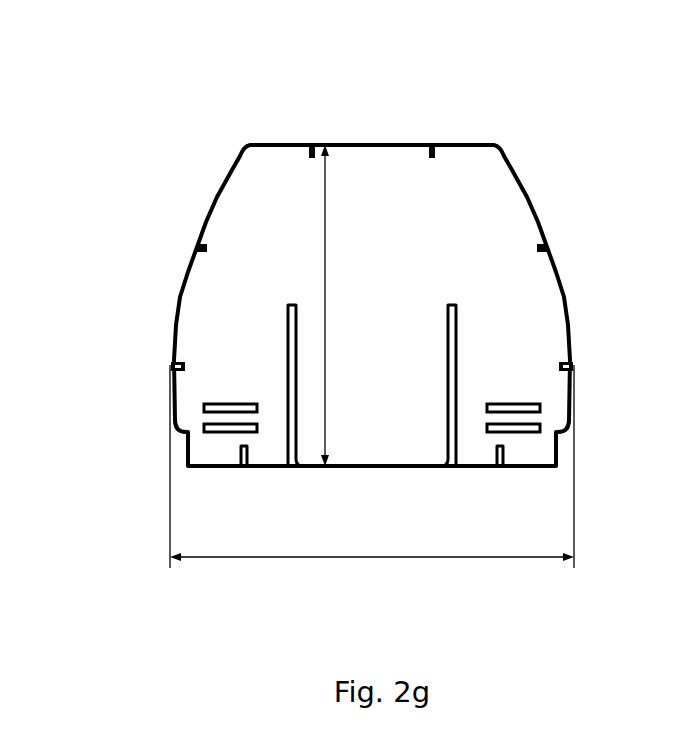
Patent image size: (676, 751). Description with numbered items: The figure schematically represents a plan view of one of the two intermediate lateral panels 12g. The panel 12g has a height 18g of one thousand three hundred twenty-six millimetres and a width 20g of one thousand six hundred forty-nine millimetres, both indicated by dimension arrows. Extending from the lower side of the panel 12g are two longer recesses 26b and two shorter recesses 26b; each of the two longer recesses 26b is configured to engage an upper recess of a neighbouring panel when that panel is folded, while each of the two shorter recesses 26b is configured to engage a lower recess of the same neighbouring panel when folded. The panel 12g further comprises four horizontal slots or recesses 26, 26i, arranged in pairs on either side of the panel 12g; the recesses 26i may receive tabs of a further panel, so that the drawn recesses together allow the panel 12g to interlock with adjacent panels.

The intermediate lateral panel 12g is at (121, 70).
The horizontal slots or recesses 26 is at (309, 152).
The recesses 26b is at (286, 309).
The horizontal recesses 26i is at (231, 406).
The height 18g is at (348, 305).
The width 20g is at (372, 466).